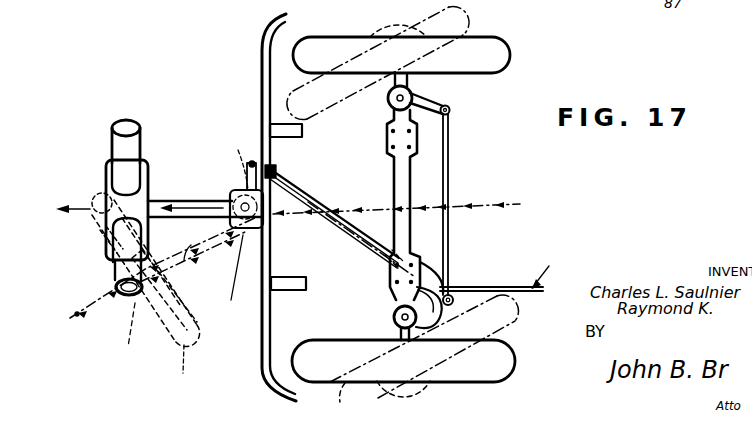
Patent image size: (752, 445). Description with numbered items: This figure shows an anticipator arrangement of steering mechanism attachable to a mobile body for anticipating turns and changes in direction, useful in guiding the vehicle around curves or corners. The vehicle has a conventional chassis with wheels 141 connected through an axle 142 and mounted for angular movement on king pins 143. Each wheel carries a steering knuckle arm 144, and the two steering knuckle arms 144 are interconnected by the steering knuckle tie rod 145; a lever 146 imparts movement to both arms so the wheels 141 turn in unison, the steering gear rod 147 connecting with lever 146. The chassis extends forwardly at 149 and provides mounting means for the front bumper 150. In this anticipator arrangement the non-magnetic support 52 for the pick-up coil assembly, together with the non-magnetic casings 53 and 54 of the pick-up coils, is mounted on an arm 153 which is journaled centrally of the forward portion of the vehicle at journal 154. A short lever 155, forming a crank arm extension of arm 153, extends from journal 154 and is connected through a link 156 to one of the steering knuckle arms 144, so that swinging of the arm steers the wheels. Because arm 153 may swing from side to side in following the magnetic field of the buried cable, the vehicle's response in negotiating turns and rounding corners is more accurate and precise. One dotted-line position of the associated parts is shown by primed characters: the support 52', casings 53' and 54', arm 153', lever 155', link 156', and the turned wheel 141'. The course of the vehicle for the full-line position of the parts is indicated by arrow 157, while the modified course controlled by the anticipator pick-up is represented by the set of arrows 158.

The non-magnetic member 52 is at (105, 210).
The non-magnetic member (dotted line position) 52' is at (146, 285).
The non-magnetic casing 53 is at (101, 308).
The non-magnetic casing (dotted line position) 53' is at (159, 308).
The non-magnetic casing 54 is at (149, 202).
The non-magnetic casing (dotted line position) 54' is at (85, 227).
The wheel 141 is at (426, 213).
The wheel (dotted line position) 141' is at (424, 201).
The axle 142 is at (393, 191).
The king pin 143 is at (412, 92).
The steering knuckle arm 144 is at (441, 118).
The steering knuckle tie rod 145 is at (449, 170).
The lever 146 is at (446, 286).
The steering gear rod 147 is at (563, 261).
The forward chassis extension 149 is at (290, 139).
The front bumper 150 is at (262, 78).
The arm 153 is at (205, 196).
The arm (dotted line position) 153' is at (208, 266).
The journal 154 is at (230, 281).
The short lever 155 is at (237, 142).
The short lever (dotted line position) 155' is at (222, 158).
The link 156 is at (332, 216).
The link (dotted line position) 156' is at (361, 245).
The arrow 157 is at (57, 204).
The set of arrows 158 is at (78, 318).